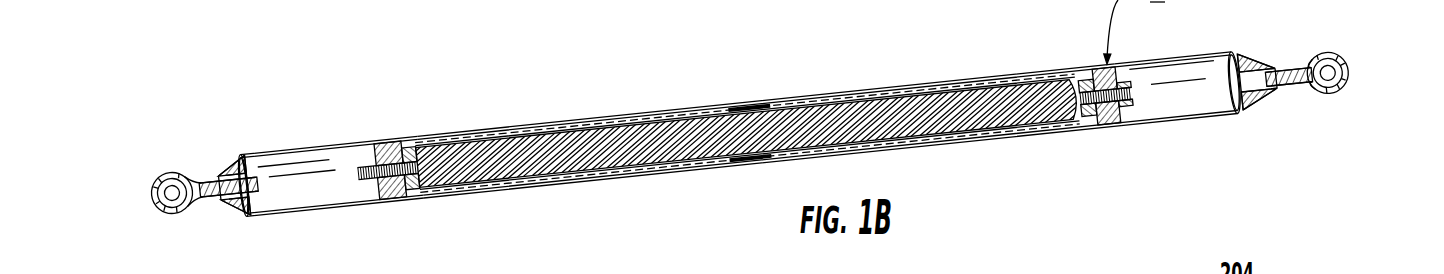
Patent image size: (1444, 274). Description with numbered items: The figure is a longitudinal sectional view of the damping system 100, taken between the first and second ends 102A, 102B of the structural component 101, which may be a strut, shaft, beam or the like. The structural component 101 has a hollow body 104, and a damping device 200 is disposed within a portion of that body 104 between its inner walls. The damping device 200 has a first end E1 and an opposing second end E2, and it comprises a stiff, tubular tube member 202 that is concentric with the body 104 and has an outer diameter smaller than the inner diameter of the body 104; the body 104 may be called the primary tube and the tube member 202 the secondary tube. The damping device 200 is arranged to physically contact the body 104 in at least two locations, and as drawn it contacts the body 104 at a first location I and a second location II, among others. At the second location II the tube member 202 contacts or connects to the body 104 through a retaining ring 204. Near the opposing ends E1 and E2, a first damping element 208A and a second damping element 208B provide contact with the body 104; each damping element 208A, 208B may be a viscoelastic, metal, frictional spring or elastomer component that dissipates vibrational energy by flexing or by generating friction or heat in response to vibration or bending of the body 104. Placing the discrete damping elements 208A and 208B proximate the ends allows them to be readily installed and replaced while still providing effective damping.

The damping system 100 is at (290, 88).
The structural component 101 is at (1177, 56).
The first end 102A is at (179, 224).
The second end 102B is at (1328, 110).
The hollow body 104 is at (305, 150).
The damping device 200 is at (1093, 134).
The tube member 202 is at (548, 128).
The retaining ring 204 is at (745, 105).
The first damping element 208A is at (378, 152).
The second damping element 208B is at (1099, 66).
The first end E1 is at (384, 212).
The second end E2 is at (1121, 131).
The first location I is at (389, 128).
The second location II is at (752, 82).